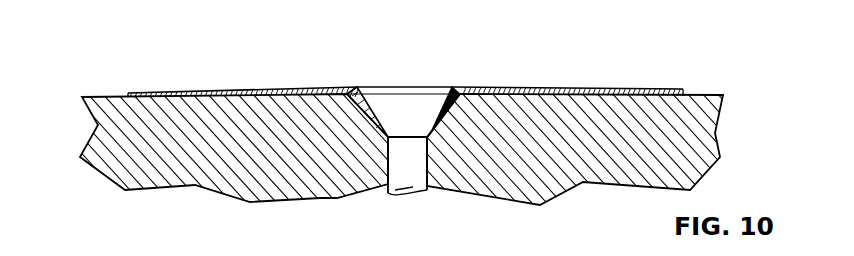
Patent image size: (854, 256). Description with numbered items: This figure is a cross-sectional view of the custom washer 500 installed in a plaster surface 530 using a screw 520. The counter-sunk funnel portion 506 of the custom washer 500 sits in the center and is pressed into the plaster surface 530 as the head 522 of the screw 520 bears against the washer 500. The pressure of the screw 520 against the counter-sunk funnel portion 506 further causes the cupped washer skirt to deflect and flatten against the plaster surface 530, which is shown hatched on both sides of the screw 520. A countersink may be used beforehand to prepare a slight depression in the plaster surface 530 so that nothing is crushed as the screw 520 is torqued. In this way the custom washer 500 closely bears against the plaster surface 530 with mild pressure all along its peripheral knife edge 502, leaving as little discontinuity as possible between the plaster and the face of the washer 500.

The custom washer 500 is at (596, 54).
The peripheral knife edge 502 is at (131, 93).
The counter-sunk funnel portion 506 is at (442, 95).
The screw 520 is at (413, 163).
The head 522 is at (395, 97).
The plaster surface 530 is at (235, 162).